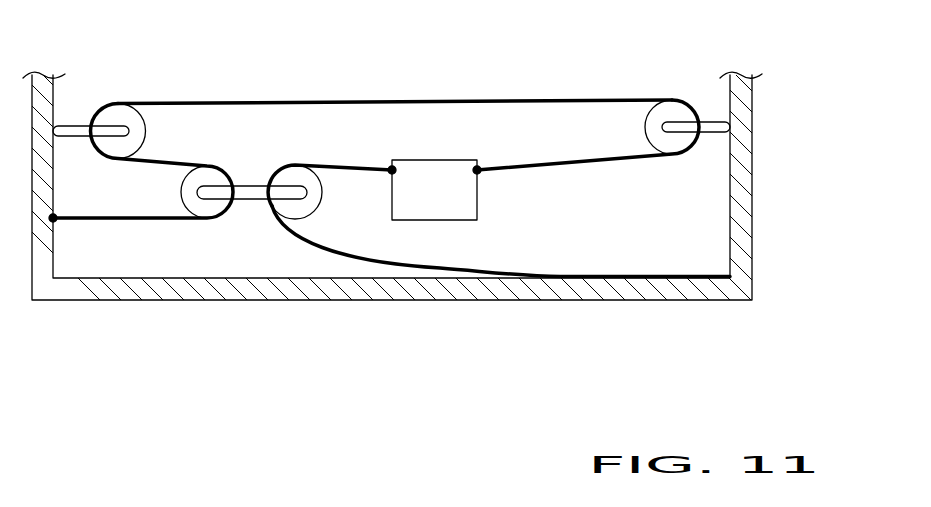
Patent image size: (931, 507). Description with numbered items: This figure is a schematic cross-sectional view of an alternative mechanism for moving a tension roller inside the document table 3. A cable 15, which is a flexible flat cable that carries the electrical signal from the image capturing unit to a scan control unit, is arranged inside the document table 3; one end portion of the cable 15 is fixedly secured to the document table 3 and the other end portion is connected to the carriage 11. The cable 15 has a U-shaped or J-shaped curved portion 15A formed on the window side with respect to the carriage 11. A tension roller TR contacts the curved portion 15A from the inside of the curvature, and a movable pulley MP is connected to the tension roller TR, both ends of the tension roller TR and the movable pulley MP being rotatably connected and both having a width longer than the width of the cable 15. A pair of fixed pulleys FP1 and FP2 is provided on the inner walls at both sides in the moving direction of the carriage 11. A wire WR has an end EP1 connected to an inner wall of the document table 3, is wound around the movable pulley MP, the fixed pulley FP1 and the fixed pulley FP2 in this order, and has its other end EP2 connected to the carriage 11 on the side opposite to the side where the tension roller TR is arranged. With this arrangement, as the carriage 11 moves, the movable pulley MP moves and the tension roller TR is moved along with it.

The document table 3 is at (46, 88).
The fixed pulley FP1 is at (147, 118).
The movable pulley MP is at (183, 166).
The curved portion 15A is at (268, 180).
The cable 15 is at (342, 165).
The carriage 11 is at (443, 177).
The wire WR is at (482, 103).
The fixed pulley FP2 is at (640, 116).
The end of wire EP1 is at (53, 219).
The tension roller TR is at (317, 210).
The other end of wire EP2 is at (478, 172).